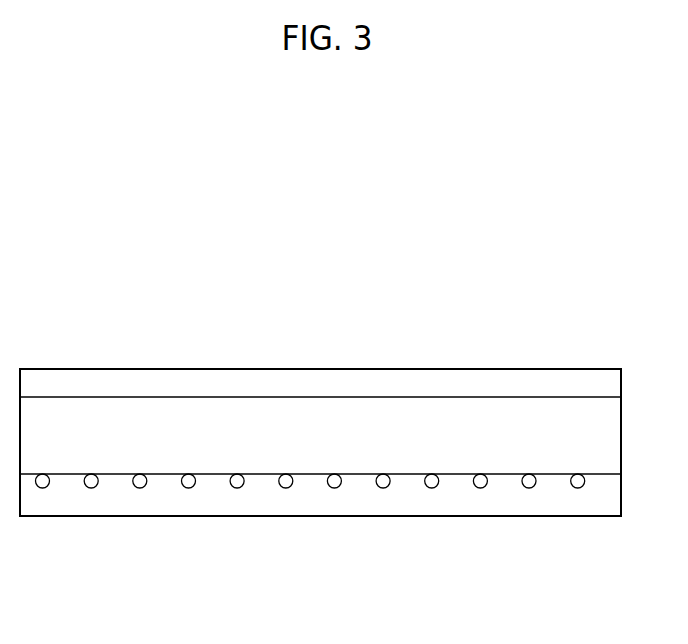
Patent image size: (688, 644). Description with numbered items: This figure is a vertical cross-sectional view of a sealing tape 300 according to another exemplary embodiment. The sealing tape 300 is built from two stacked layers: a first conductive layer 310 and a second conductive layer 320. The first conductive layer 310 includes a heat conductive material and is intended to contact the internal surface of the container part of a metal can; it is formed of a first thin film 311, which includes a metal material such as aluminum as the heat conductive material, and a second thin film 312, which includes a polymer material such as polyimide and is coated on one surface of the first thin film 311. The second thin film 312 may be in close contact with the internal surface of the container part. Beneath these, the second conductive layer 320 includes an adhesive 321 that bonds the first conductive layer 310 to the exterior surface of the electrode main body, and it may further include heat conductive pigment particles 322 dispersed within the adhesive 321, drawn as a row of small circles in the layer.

The sealing tape 300 is at (101, 321).
The first conductive layer 310 is at (528, 301).
The first thin film 311 is at (422, 386).
The second thin film 312 is at (502, 423).
The second conductive layer 320 is at (518, 570).
The adhesive 321 is at (498, 500).
The heat conductive pigment particles 322 is at (431, 487).